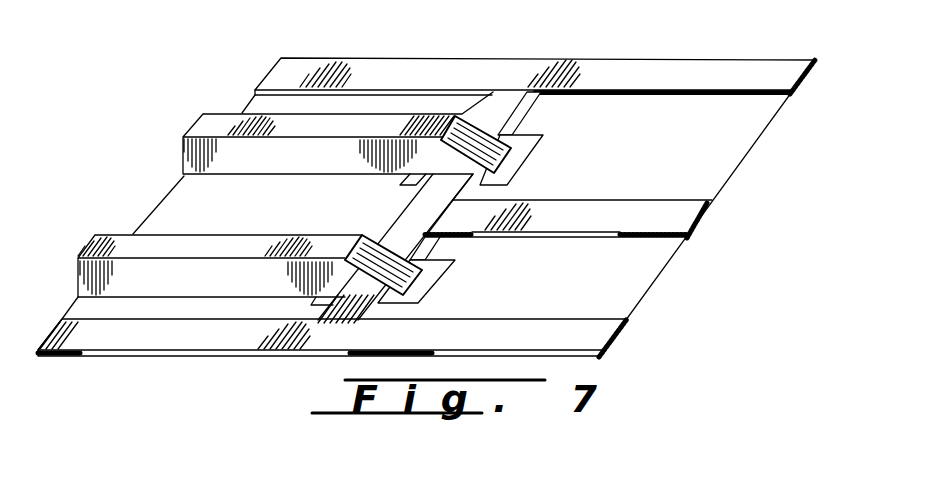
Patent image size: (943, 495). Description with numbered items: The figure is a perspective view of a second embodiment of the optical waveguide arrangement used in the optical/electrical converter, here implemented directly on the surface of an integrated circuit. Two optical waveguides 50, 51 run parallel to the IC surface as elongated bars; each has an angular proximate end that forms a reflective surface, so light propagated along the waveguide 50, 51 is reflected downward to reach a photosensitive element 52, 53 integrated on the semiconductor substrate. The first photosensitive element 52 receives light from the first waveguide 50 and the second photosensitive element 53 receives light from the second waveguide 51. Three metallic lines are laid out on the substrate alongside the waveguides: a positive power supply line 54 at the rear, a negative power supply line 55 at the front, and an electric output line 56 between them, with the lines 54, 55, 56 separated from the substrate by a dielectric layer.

The optical waveguide 50 is at (200, 147).
The optical waveguide 51 is at (108, 248).
The photosensitive element 52 is at (535, 143).
The photosensitive element 53 is at (445, 263).
The positive power supply line 54 is at (392, 75).
The negative power supply line 55 is at (203, 336).
The electric output line 56 is at (680, 214).